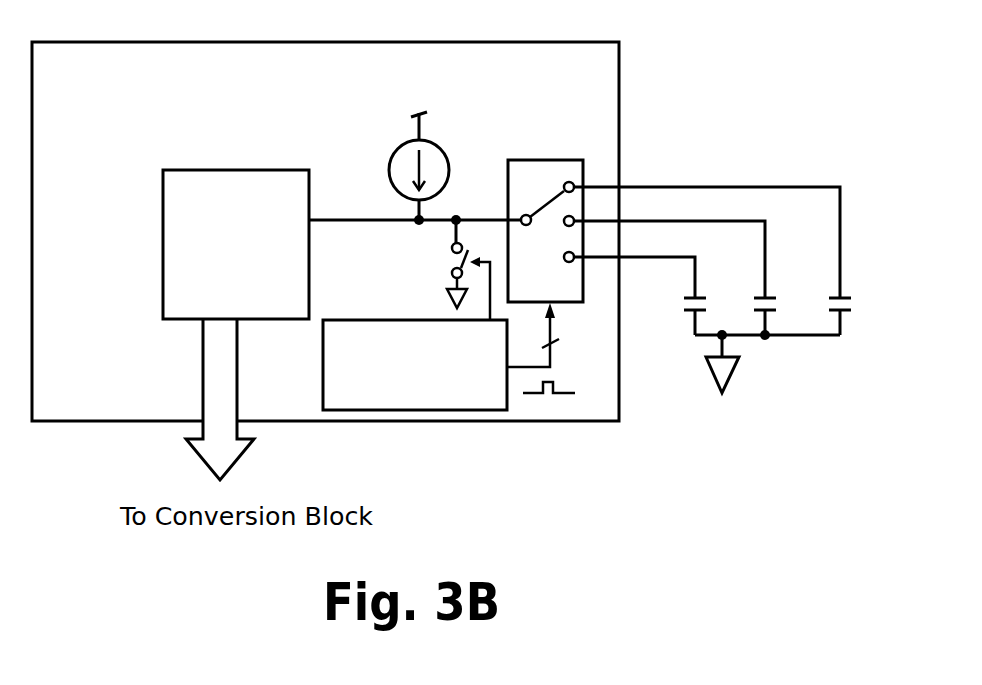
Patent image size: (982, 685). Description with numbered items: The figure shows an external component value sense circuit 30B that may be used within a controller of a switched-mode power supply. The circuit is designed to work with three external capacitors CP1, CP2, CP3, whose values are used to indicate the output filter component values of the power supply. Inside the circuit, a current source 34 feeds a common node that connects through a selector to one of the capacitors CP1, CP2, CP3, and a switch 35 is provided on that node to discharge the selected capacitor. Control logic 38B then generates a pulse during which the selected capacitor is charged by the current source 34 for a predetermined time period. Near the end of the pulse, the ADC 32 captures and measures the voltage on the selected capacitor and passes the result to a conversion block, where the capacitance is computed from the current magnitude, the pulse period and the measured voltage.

The external component value sense circuit 30B is at (103, 114).
The ADC 32 is at (213, 275).
The current source 34 is at (427, 140).
The switch 35 is at (450, 258).
The control logic 38B is at (458, 394).
The external capacitor CP1 is at (640, 296).
The external capacitor CP2 is at (675, 278).
The external capacitor CP3 is at (712, 261).